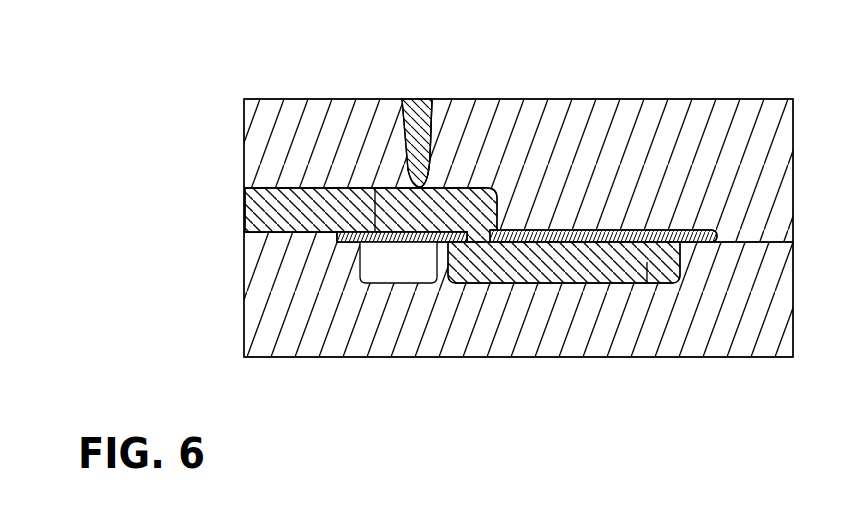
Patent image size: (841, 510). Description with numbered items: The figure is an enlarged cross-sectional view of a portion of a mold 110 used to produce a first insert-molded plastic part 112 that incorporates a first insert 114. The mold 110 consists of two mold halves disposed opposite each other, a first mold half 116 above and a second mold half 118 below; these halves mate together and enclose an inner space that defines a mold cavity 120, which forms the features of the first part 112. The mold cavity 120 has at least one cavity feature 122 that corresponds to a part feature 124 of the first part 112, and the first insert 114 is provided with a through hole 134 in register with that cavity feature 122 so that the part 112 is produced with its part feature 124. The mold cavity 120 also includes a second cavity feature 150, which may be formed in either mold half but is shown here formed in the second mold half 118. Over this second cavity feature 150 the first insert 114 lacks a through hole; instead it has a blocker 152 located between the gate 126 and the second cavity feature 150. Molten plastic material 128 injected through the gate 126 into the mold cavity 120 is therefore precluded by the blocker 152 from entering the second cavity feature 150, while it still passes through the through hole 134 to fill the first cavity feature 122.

The mold 110 is at (188, 122).
The first insert-molded plastic part 112 is at (320, 182).
The first insert 114 is at (352, 246).
The first mold half 116 is at (295, 162).
The second mold half 118 is at (293, 280).
The mold cavity 120 is at (392, 188).
The cavity feature 122 is at (614, 283).
The part feature 124 is at (647, 262).
The gate 126 is at (432, 137).
The molten plastic material 128 is at (420, 100).
The through hole 134 is at (490, 232).
The second cavity feature 150 is at (402, 285).
The blocker 152 is at (374, 188).